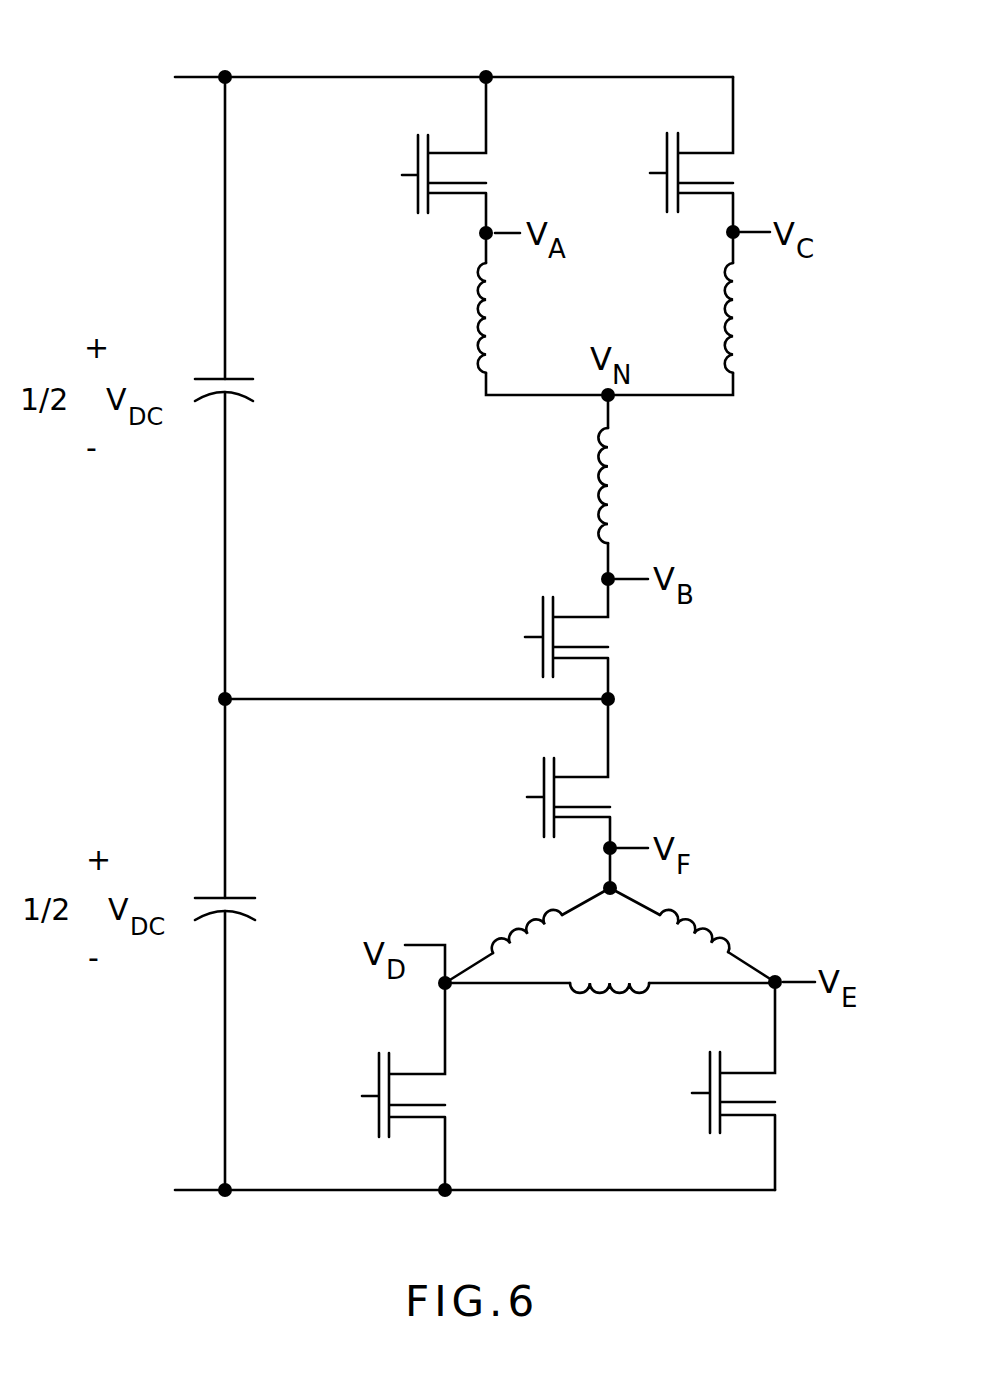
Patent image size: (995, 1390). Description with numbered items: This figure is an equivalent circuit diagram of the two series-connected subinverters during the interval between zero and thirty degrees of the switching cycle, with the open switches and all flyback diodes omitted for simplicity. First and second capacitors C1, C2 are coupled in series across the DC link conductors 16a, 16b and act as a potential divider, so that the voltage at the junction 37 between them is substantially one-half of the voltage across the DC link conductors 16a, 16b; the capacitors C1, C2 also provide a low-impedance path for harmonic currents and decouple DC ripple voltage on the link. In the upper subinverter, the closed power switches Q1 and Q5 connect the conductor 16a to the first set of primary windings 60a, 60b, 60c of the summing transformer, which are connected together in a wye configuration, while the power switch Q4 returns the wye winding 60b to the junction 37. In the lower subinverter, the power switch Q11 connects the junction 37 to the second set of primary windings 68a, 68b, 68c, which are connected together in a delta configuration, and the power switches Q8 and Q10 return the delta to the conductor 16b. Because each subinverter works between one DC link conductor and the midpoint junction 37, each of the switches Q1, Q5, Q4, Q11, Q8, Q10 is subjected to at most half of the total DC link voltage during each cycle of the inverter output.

The DC link conductor 16a is at (315, 77).
The DC link conductor 16b is at (335, 1188).
The junction 37 is at (225, 695).
The first capacitor C1 is at (233, 377).
The second capacitor C2 is at (235, 897).
The power switch Q1 is at (432, 152).
The power switch Q5 is at (708, 152).
The power switch Q4 is at (572, 612).
The power switch Q11 is at (583, 775).
The power switch Q8 is at (417, 1072).
The power switch Q10 is at (748, 1070).
The primary winding 60a is at (470, 345).
The primary winding 60b is at (597, 473).
The primary winding 60c is at (722, 330).
The primary winding 68a is at (623, 995).
The primary winding 68b is at (725, 945).
The primary winding 68c is at (548, 912).